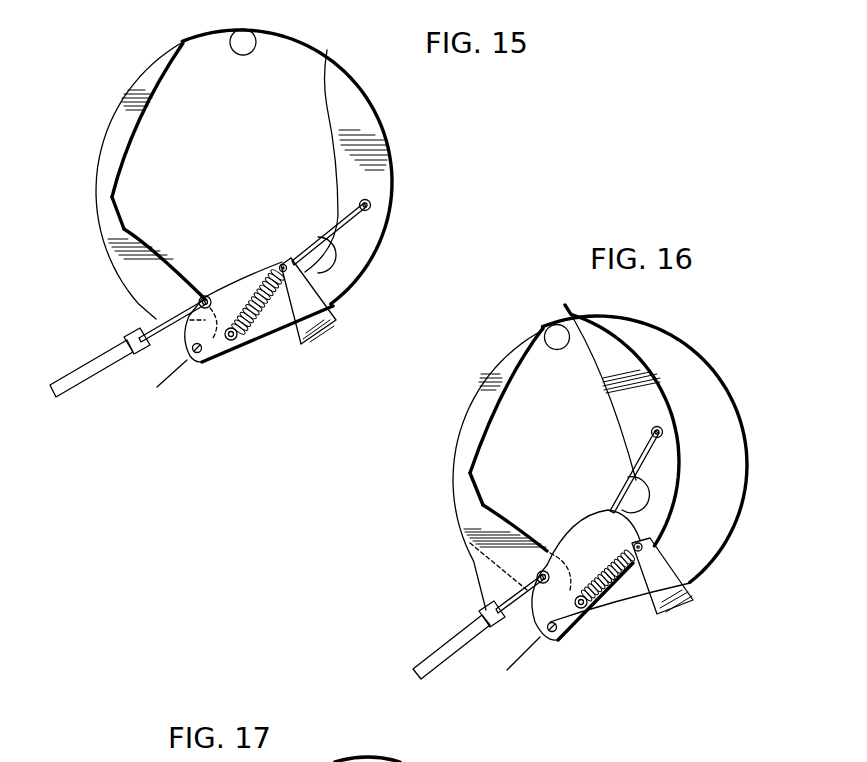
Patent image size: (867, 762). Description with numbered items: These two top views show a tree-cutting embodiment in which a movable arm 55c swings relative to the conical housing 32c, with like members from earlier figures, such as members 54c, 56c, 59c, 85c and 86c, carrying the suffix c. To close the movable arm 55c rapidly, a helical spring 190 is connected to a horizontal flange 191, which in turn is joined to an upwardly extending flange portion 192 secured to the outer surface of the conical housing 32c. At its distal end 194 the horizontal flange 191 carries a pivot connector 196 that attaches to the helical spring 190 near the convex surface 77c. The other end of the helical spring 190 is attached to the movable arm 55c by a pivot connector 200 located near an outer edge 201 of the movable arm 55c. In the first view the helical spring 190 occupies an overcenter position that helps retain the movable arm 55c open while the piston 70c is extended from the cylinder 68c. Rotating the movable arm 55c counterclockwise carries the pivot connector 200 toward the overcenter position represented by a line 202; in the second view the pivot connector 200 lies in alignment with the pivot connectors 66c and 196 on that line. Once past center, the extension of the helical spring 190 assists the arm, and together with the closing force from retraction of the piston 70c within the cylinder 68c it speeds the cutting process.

In FIG. 15, the conical housing 32c is at (390, 172).
In FIG. 16, the conical housing 32c is at (700, 353).
In FIG. 15, the eyelet loop 54c is at (236, 33).
In FIG. 16, the eyelet loop 54c is at (552, 329).
In FIG. 15, the movable arm 55c is at (363, 115).
In FIG. 16, the movable arm 55c is at (590, 326).
In FIG. 15, the left jaw 59c is at (151, 180).
In FIG. 16, the left jaw 59c is at (491, 469).
In FIG. 15, the jaw shoulder 86c is at (113, 197).
In FIG. 16, the jaw shoulder 86c is at (472, 478).
In FIG. 15, the jaw cam surface 85c is at (143, 244).
In FIG. 16, the jaw cam surface 85c is at (500, 500).
In FIG. 15, the convex surface 77c is at (240, 270).
In FIG. 16, the convex surface 77c is at (570, 527).
In FIG. 15, the piston 70c is at (160, 322).
In FIG. 16, the piston 70c is at (510, 600).
In FIG. 15, the cylinder 68c is at (92, 360).
In FIG. 16, the cylinder 68c is at (455, 638).
In FIG. 15, the pivot connector 66c is at (200, 355).
In FIG. 16, the pivot connector 66c is at (557, 632).
In FIG. 15, the line 202 is at (175, 400).
In FIG. 16, the line 202 is at (533, 670).
In FIG. 15, the pivot connector 196 is at (282, 262).
In FIG. 16, the pivot connector 196 is at (648, 547).
In FIG. 15, the latch lever 56c is at (328, 258).
In FIG. 16, the latch lever 56c is at (643, 498).
In FIG. 15, the distal end 194 is at (287, 275).
In FIG. 15, the horizontal flange 191 is at (353, 301).
In FIG. 16, the horizontal flange 191 is at (672, 580).
In FIG. 15, the upwardly extending flange portion 192 is at (333, 332).
In FIG. 15, the helical spring 190 is at (257, 337).
In FIG. 16, the helical spring 190 is at (608, 583).
In FIG. 15, the outer edge 201 is at (247, 327).
In FIG. 16, the outer edge 201 is at (605, 590).
In FIG. 15, the pivot connector 200 is at (262, 332).
In FIG. 16, the pivot connector 200 is at (595, 598).